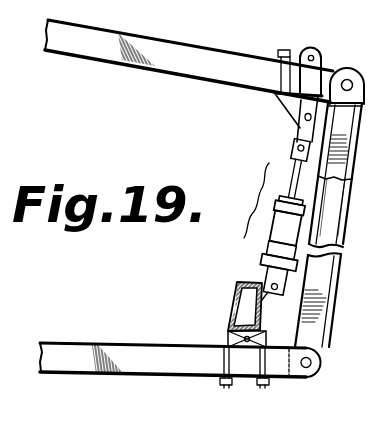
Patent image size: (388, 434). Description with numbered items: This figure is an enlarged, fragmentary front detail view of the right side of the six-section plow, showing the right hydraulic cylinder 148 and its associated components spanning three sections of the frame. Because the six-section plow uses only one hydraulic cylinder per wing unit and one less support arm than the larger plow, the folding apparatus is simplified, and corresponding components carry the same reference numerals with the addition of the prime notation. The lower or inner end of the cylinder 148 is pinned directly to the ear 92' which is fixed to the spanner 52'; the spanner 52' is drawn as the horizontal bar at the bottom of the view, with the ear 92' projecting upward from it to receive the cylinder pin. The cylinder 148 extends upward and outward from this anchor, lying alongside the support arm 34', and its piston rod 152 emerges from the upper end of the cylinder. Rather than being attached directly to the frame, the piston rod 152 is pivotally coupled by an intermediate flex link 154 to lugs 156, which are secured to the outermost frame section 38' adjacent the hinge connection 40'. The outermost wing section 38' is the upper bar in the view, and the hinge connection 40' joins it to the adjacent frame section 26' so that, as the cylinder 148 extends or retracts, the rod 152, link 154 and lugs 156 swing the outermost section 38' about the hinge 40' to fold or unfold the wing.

The right outermost wing section 38' is at (189, 61).
The frame section 26' is at (180, 348).
The support arm 34' is at (336, 225).
The hinge connection 40' is at (356, 77).
The lugs 156 is at (283, 102).
The flex link 154 is at (299, 132).
The piston rod 152 is at (304, 179).
The right hydraulic cylinder 148 is at (297, 230).
The ear 92' is at (254, 274).
The spanner 52' is at (227, 332).